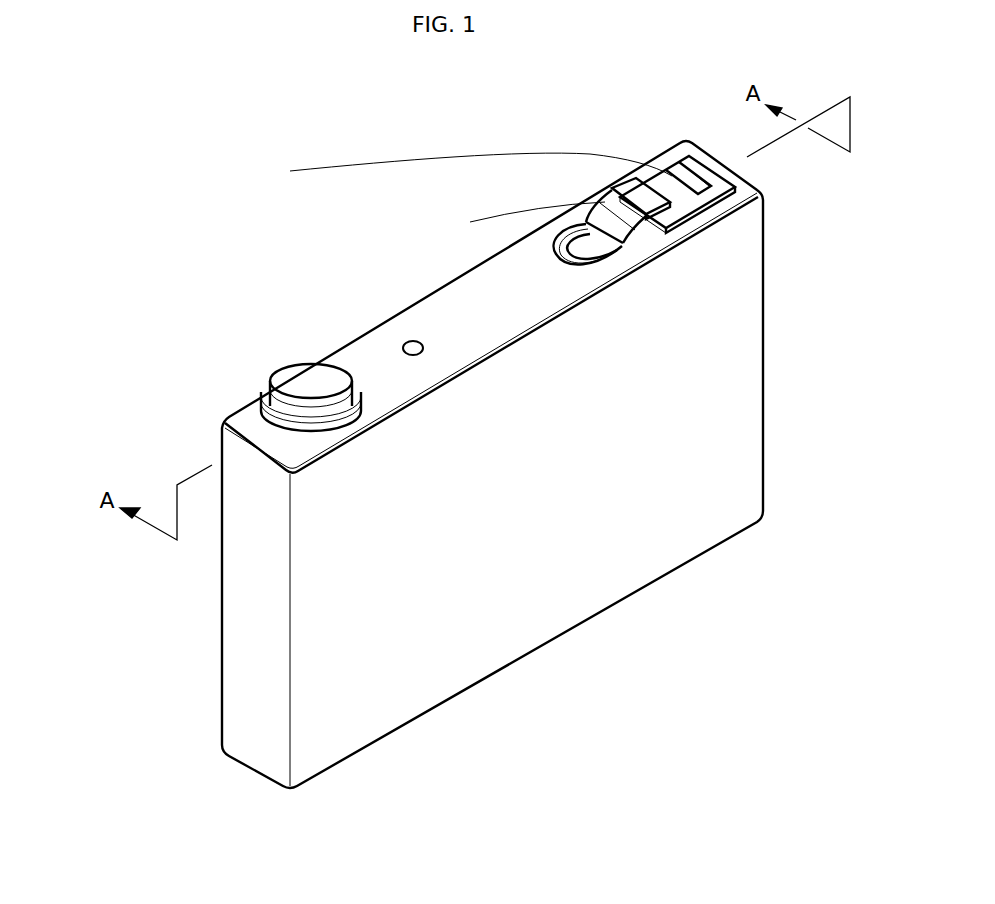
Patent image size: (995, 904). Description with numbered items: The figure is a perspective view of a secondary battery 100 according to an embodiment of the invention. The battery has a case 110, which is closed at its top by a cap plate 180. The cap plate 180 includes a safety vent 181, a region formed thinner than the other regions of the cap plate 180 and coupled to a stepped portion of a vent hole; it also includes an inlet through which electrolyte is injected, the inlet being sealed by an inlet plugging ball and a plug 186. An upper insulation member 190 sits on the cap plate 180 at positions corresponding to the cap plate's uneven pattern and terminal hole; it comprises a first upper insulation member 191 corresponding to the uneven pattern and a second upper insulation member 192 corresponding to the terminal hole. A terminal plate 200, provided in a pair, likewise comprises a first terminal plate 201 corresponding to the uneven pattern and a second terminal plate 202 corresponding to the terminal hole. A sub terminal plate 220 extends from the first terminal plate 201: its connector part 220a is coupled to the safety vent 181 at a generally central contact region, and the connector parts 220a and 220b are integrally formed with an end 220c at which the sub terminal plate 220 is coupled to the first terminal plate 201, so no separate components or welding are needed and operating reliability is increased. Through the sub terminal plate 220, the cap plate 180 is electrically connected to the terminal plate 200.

The secondary battery 100 is at (104, 127).
The case 110 is at (753, 366).
The cap plate 180 is at (753, 185).
The safety vent 181 is at (590, 249).
The plug 186 is at (415, 352).
The upper insulation member 190 is at (372, 203).
The first upper insulation member 191 is at (516, 218).
The second upper insulation member 192 is at (358, 396).
The terminal plate 200 is at (245, 165).
The first terminal plate 201 is at (458, 170).
The second terminal plate 202 is at (306, 366).
The sub terminal plate 220 is at (748, 343).
The connector part 220a is at (622, 244).
The connector part 220b is at (657, 203).
The end 220c is at (702, 212).